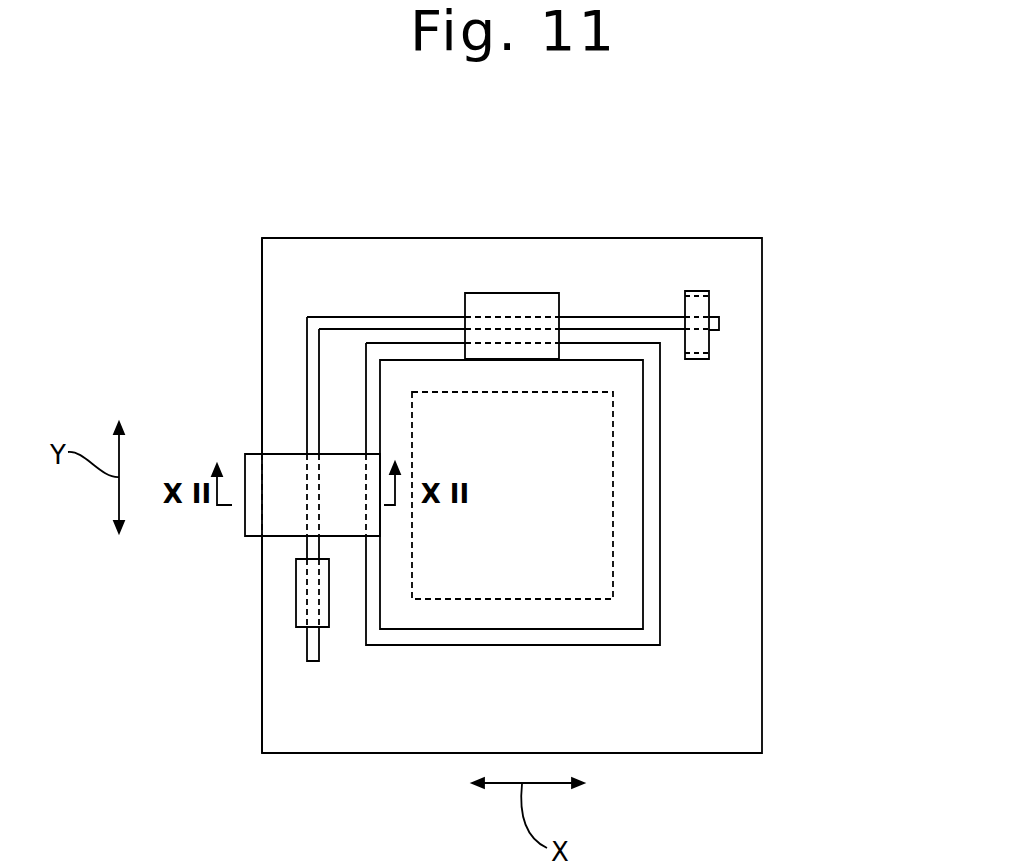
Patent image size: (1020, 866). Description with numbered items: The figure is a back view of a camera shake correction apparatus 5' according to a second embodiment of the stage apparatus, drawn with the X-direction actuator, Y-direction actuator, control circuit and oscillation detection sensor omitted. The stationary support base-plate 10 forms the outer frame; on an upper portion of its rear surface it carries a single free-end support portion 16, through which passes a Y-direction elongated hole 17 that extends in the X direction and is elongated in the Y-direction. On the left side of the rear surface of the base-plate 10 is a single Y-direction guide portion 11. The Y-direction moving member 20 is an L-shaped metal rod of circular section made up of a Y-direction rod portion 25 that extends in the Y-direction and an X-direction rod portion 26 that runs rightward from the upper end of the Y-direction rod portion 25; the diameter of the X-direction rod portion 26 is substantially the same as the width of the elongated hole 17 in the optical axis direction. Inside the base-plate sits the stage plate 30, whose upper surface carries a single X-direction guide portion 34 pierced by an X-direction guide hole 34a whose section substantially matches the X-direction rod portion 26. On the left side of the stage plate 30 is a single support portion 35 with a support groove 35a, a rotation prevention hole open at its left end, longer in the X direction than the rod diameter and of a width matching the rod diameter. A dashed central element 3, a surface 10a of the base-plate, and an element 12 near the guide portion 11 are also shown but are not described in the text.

The camera shake correction apparatus 5' is at (523, 458).
The stationary support base-plate 10 is at (740, 590).
The inner side surface of package 10a is at (658, 531).
The stage plate 30 is at (625, 430).
The image pickup element 3 is at (615, 483).
The X-direction rod portion 26 is at (394, 325).
The Y-direction rod portion 25 is at (311, 385).
The Y-direction guide portion 11 is at (325, 622).
The terminal pad 12 is at (320, 600).
The support portion 35 is at (250, 537).
The support groove 35a is at (360, 497).
The X-direction guide portion 34 is at (483, 305).
The X-direction guide hole 34a is at (513, 327).
The Y-direction moving member 20 is at (600, 318).
The free-end support portion 16 is at (692, 300).
The Y-direction elongated hole 17 is at (697, 296).